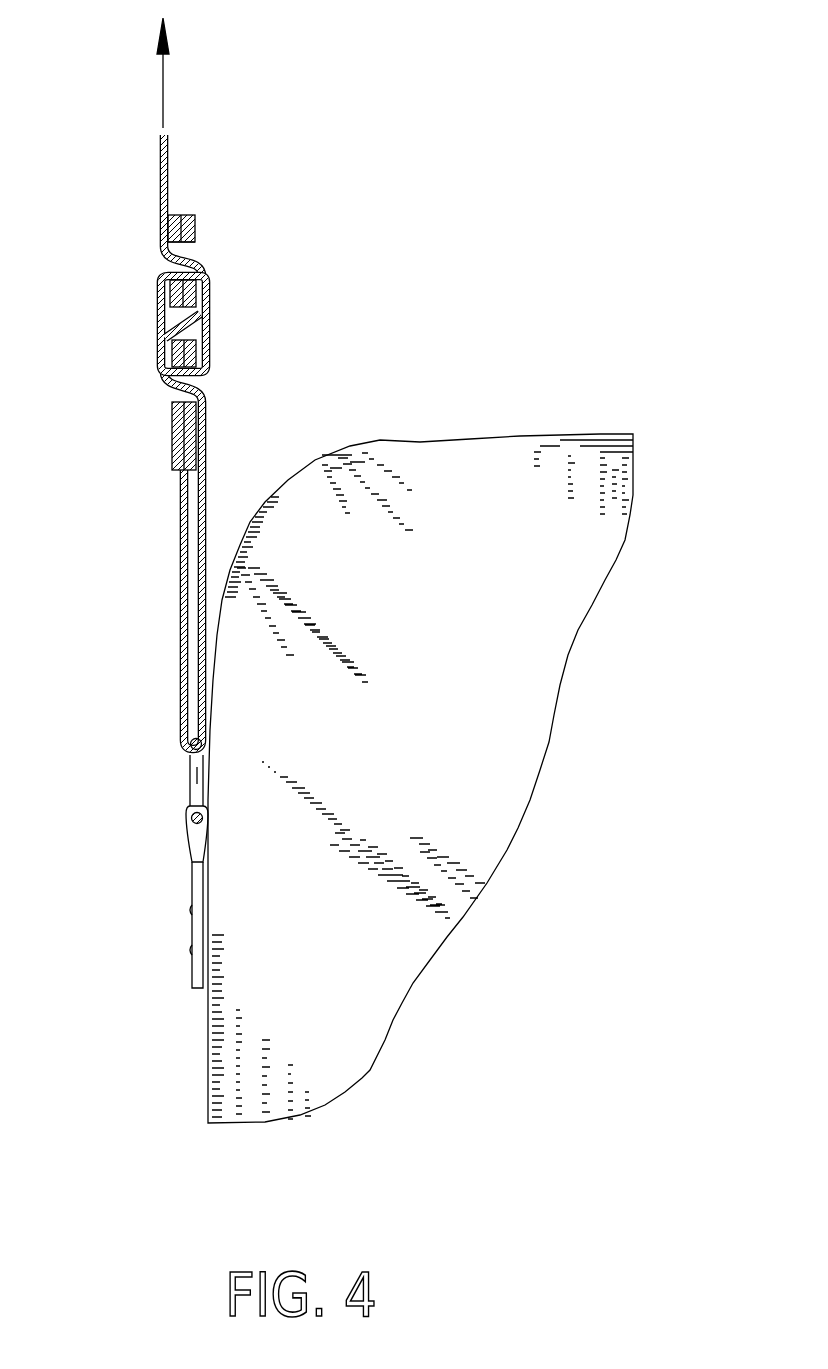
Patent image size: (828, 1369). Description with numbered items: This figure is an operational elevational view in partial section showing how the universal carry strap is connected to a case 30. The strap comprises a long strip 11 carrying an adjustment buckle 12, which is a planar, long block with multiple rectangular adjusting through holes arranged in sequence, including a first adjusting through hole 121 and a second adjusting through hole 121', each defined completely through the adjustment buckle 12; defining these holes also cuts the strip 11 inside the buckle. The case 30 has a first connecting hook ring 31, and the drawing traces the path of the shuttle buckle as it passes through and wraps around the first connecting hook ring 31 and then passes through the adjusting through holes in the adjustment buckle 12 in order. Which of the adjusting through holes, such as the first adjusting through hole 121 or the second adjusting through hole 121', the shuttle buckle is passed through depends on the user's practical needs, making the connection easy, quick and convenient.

The long strip 11 is at (182, 517).
The adjustment buckle 12 is at (192, 222).
The first adjusting through hole 121 is at (240, 408).
The second adjusting through hole 121' is at (234, 324).
The case 30 is at (522, 457).
The first connecting hook ring 31 is at (192, 788).